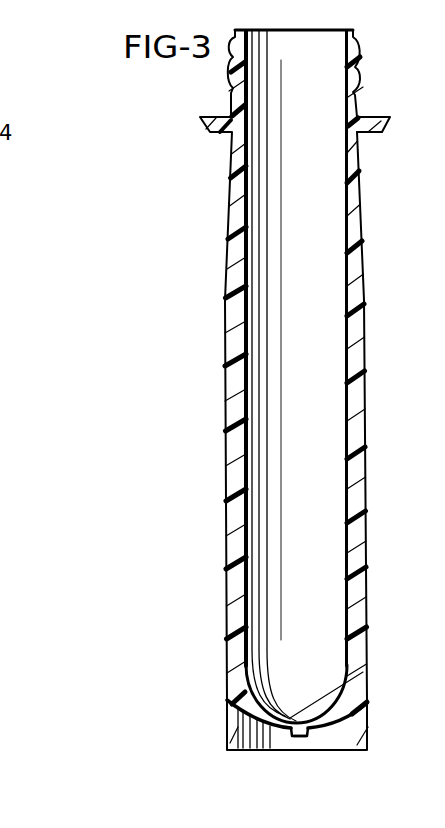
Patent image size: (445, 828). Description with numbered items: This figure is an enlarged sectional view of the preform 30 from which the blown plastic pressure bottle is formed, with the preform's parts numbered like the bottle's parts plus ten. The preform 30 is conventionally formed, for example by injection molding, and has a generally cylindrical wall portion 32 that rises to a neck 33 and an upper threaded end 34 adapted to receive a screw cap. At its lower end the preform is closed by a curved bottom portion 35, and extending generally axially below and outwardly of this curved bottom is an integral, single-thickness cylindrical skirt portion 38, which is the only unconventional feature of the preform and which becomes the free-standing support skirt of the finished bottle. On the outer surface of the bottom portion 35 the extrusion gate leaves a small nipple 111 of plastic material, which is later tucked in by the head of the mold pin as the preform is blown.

The preform 30 is at (373, 419).
The cylindrical wall portion 32 is at (368, 527).
The neck 33 is at (358, 221).
The upper threaded end 34 is at (363, 87).
The closed bottom portion 35 is at (270, 703).
The skirt portion 38 is at (367, 720).
The nipple 111 is at (300, 737).